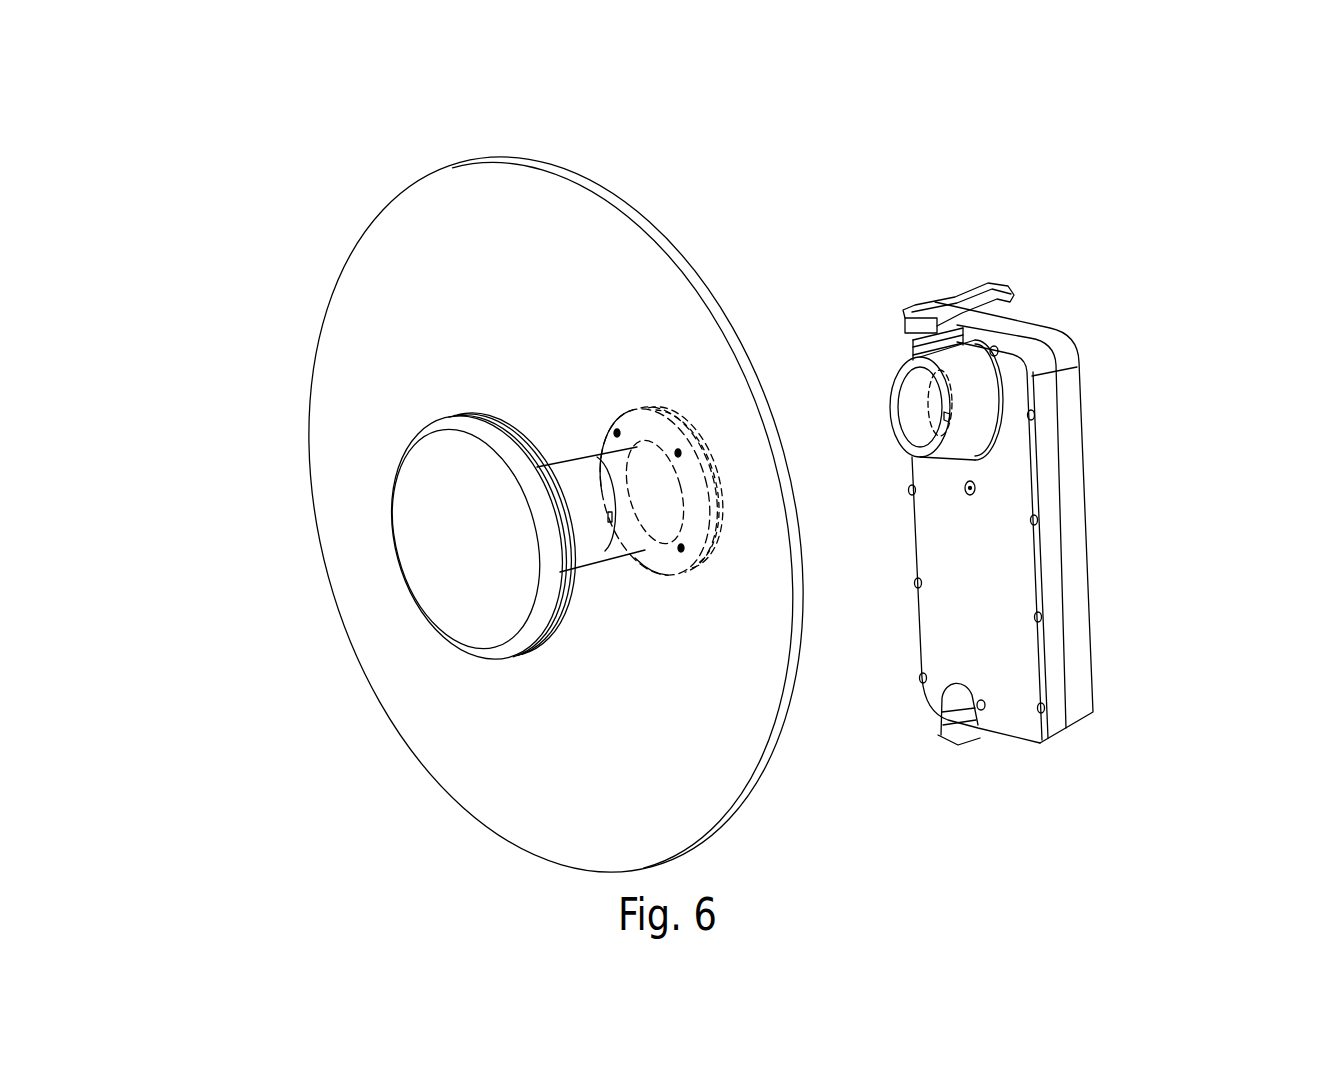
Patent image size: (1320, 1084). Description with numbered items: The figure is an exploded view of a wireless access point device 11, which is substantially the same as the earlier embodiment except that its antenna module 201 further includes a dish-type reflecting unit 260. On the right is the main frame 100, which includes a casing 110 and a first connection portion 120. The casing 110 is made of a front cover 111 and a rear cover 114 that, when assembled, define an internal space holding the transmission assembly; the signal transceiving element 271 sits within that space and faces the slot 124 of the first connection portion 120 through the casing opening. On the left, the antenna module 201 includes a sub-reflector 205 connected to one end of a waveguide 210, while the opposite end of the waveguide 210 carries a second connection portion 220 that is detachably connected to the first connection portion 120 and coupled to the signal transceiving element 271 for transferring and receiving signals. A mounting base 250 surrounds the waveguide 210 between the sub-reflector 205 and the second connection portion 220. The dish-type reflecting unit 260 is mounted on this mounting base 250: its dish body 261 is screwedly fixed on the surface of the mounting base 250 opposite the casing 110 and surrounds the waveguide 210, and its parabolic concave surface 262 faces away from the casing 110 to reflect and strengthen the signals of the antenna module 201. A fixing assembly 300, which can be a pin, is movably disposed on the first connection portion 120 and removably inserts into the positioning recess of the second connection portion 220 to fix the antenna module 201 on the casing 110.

The wireless access point device 11 is at (1237, 88).
The main frame 100 is at (1077, 335).
The casing 110 is at (1160, 598).
The front cover 111 is at (1055, 658).
The rear cover 114 is at (1080, 620).
The first connection portion 120 is at (969, 364).
The slot 124 is at (882, 405).
The antenna module 201 is at (225, 330).
The sub-reflector 205 is at (410, 480).
The waveguide 210 is at (592, 462).
The second connection portion 220 is at (700, 442).
The mounting base 250 is at (633, 423).
The dish-type reflecting unit 260 is at (523, 108).
The dish body 261 is at (533, 158).
The parabolic concave surface 262 is at (414, 217).
The signal transceiving element 271 is at (942, 405).
The fixing assembly 300 is at (960, 293).